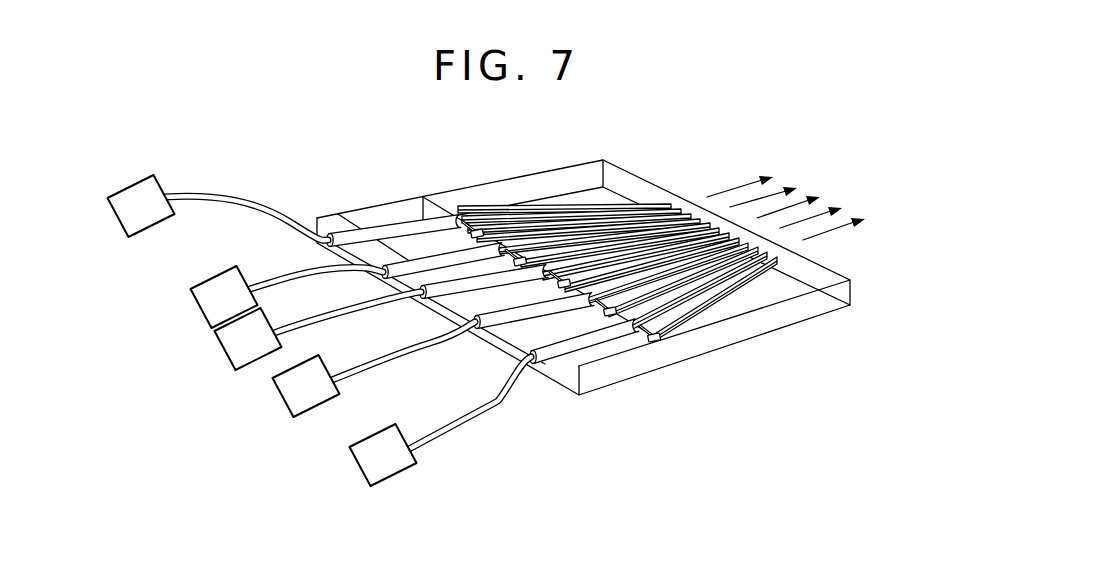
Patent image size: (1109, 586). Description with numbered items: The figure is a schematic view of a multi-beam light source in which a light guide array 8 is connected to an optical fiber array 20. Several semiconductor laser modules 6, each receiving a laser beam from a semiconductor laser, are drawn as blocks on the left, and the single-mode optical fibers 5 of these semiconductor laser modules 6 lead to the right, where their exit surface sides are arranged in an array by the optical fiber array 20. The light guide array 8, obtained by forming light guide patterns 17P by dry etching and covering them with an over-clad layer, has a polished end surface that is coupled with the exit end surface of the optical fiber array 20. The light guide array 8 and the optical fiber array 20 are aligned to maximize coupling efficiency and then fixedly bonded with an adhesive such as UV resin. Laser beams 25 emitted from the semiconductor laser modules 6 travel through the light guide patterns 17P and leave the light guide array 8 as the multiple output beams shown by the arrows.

The single-mode optical fiber 5 is at (497, 403).
The semiconductor laser module 6 is at (390, 462).
The light guide array 8 is at (747, 332).
The light guide pattern 17P is at (757, 288).
The optical fiber array 20 is at (628, 367).
The laser beam 25 is at (832, 236).